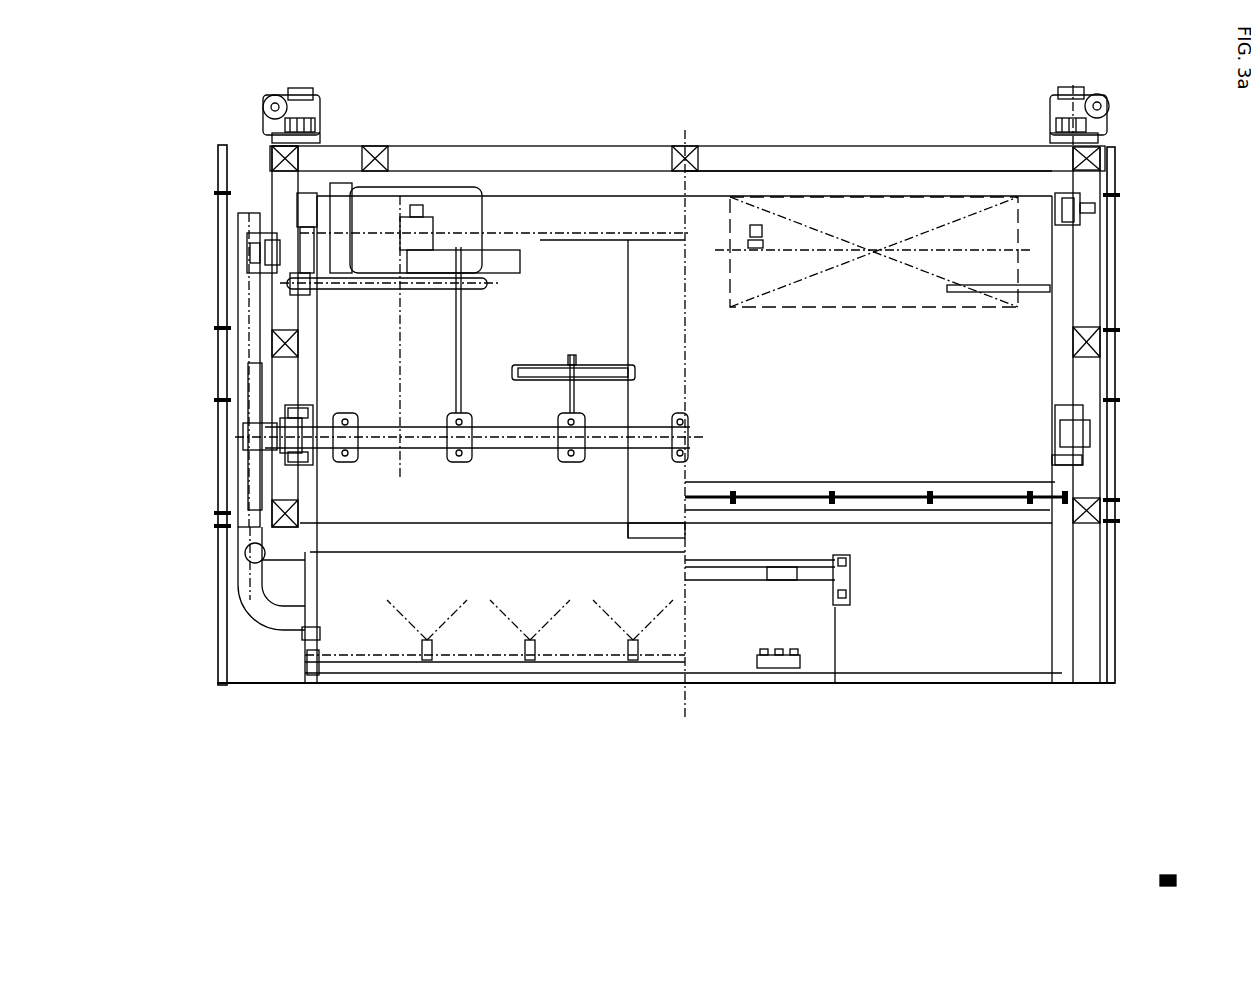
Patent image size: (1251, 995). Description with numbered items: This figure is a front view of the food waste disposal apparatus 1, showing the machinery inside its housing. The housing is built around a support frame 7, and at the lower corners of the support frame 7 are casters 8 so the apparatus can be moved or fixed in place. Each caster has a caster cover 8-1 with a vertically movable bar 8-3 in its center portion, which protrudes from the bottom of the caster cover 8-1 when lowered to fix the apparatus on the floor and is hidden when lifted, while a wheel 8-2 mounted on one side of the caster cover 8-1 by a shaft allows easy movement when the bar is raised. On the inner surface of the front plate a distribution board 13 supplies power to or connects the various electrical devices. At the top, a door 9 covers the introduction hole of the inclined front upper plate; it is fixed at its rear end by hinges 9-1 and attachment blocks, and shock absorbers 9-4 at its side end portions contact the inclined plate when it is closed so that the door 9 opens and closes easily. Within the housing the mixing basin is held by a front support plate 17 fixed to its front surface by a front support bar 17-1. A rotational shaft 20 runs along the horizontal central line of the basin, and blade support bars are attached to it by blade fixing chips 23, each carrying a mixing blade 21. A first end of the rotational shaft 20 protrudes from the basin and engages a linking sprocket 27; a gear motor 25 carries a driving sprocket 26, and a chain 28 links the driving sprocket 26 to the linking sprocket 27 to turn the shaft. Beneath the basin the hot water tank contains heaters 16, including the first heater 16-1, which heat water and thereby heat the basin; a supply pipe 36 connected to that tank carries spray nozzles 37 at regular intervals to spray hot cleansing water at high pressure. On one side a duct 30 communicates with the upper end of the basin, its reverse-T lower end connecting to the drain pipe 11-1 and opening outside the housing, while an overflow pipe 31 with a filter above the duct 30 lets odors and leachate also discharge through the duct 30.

The food waste disposal apparatus 1 is at (1102, 846).
The support frame 7 is at (515, 155).
The casters 8 is at (223, 81).
The caster cover 8-1 is at (285, 118).
The wheel 8-2 is at (278, 95).
The vertically movable bar 8-3 is at (300, 88).
The door 9 is at (720, 650).
The hinges 9-1 is at (792, 672).
The shock absorbers 9-4 is at (847, 603).
The drain pipe 11-1 is at (290, 202).
The distribution board 13 is at (893, 203).
The heaters 16 is at (882, 283).
The first heater 16-1 is at (960, 290).
The front support plate 17 is at (990, 508).
The front support bar 17-1 is at (890, 508).
The rotational shaft 20 is at (537, 458).
The mixing blade 21 is at (515, 367).
The blade fixing chips 23 is at (452, 462).
The gear motor 25 is at (373, 207).
The driving sprocket 26 is at (247, 227).
The linking sprocket 27 is at (250, 405).
The chain 28 is at (253, 287).
The duct 30 is at (240, 567).
The overflow pipe 31 is at (288, 568).
The supply pipe 36 is at (432, 663).
The spray nozzles 37 is at (632, 663).